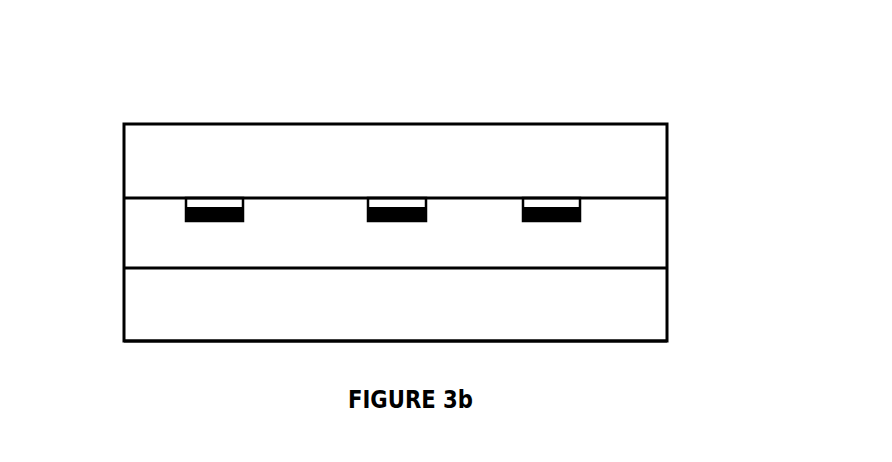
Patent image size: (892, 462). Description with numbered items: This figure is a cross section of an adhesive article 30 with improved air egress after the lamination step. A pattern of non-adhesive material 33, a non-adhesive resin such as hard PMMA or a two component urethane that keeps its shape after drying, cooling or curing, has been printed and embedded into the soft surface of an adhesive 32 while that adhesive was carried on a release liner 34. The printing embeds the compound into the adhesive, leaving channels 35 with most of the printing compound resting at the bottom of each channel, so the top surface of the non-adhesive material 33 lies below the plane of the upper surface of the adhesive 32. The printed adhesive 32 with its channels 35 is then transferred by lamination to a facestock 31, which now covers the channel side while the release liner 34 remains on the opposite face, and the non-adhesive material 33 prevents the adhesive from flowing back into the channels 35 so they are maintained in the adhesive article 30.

The adhesive article 30 is at (195, 94).
The facestock 31 is at (670, 176).
The adhesive 32 is at (670, 232).
The non-adhesive material 33 is at (582, 206).
The release liner 34 is at (670, 309).
The channels 35 is at (543, 203).